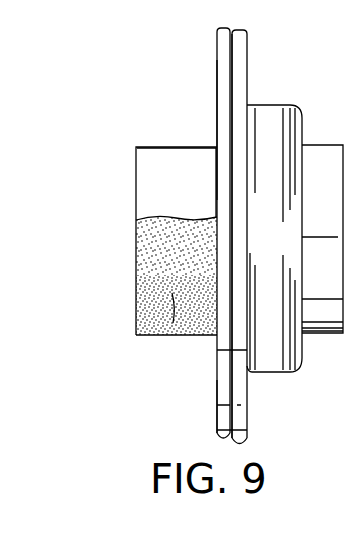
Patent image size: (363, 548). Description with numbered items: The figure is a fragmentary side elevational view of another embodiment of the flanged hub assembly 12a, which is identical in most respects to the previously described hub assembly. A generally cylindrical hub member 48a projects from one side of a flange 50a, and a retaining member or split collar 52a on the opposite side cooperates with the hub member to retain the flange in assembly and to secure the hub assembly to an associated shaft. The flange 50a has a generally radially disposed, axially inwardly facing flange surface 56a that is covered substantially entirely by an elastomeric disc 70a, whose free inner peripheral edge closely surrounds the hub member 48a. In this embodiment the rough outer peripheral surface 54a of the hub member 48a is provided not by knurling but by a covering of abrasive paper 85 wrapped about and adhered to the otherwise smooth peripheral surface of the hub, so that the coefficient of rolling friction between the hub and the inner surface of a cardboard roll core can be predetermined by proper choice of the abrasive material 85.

The hub assembly 12a is at (329, 102).
The hub member 48a is at (160, 147).
The flange 50a is at (248, 67).
The split collar 52a is at (325, 334).
The rough outer peripheral surface 54a is at (184, 158).
The flange surface 56a is at (231, 50).
The elastomeric disc 70a is at (217, 402).
The abrasive paper 85 is at (170, 335).